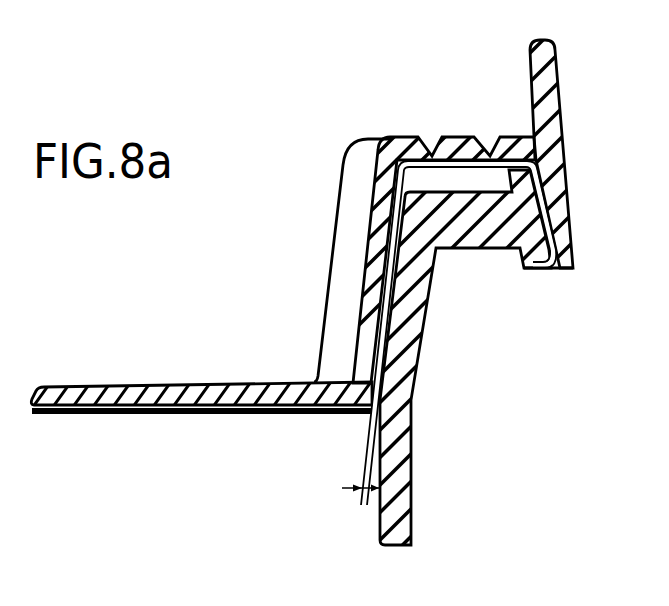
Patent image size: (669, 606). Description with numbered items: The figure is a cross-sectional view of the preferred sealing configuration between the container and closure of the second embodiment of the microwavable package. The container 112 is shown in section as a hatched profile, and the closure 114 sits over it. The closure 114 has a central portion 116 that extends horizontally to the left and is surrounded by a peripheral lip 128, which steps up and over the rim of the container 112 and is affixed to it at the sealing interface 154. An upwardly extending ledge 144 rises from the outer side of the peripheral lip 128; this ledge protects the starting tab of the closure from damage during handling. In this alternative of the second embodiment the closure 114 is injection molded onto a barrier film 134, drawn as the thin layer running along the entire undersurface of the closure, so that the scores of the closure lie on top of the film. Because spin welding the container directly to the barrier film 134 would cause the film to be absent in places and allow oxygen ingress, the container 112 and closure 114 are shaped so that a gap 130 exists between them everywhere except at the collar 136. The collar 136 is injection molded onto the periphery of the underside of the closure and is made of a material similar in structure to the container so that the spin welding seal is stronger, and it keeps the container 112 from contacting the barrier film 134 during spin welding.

The container 112 is at (400, 470).
The closure 114 is at (300, 364).
The central portion 116 is at (201, 386).
The peripheral lip 128 is at (462, 107).
The gap 130 is at (333, 491).
The barrier film 134 is at (159, 414).
The collar 136 is at (556, 272).
The ledge 144 is at (547, 92).
The sealing interface 154 is at (579, 205).